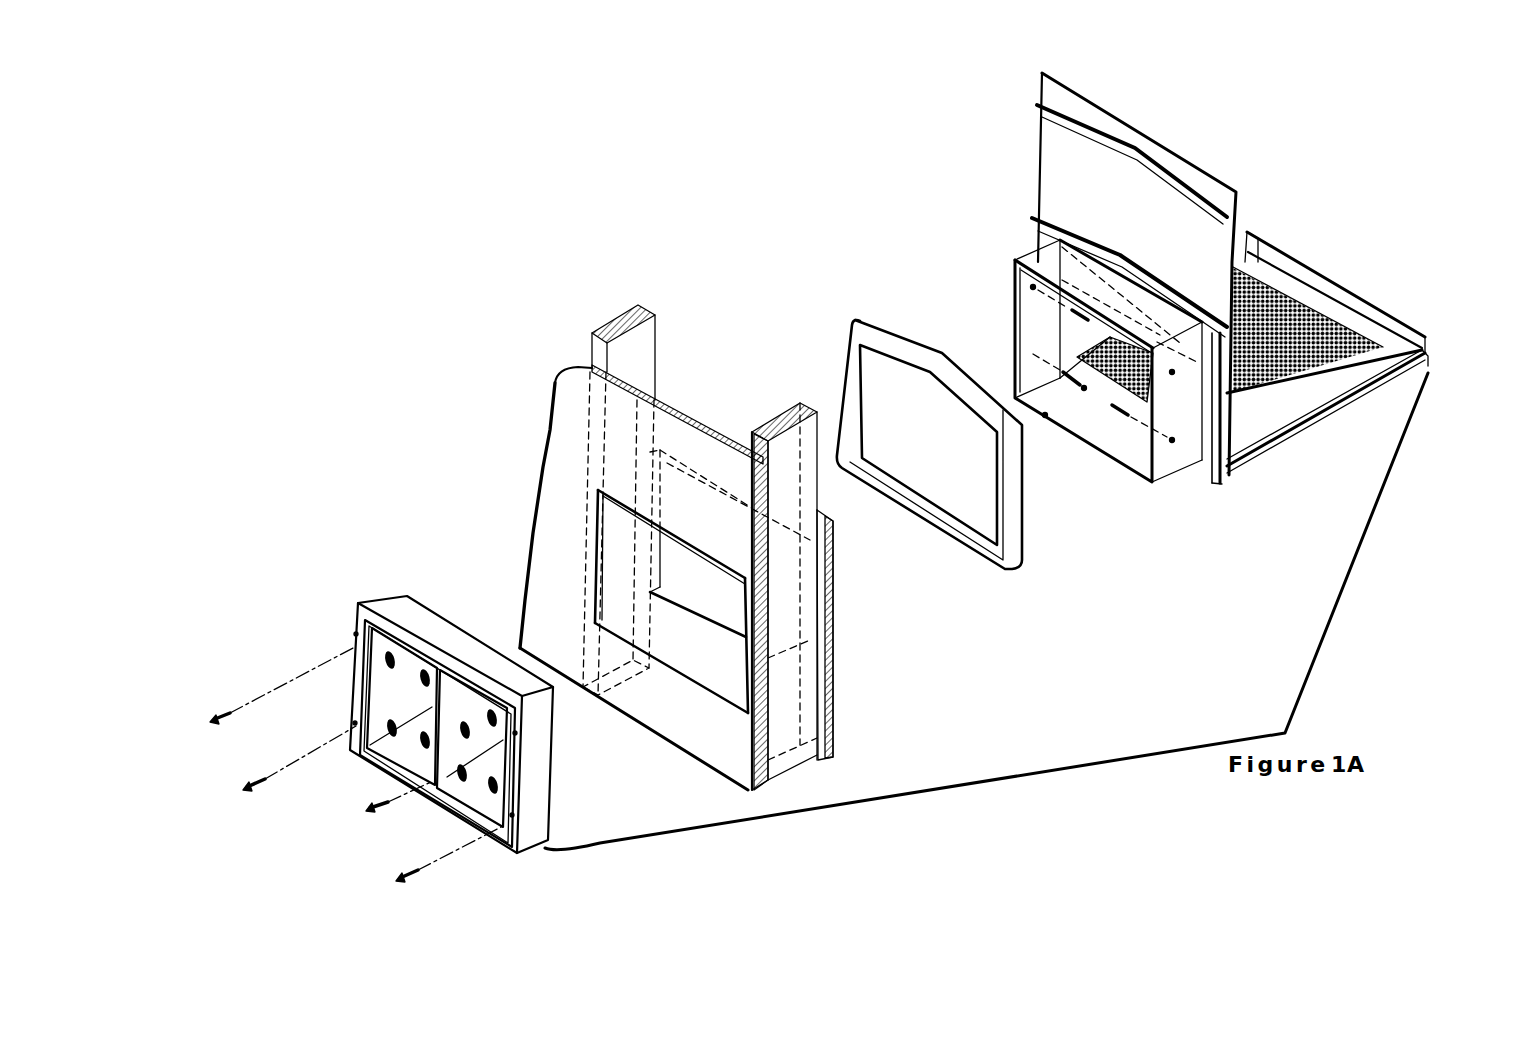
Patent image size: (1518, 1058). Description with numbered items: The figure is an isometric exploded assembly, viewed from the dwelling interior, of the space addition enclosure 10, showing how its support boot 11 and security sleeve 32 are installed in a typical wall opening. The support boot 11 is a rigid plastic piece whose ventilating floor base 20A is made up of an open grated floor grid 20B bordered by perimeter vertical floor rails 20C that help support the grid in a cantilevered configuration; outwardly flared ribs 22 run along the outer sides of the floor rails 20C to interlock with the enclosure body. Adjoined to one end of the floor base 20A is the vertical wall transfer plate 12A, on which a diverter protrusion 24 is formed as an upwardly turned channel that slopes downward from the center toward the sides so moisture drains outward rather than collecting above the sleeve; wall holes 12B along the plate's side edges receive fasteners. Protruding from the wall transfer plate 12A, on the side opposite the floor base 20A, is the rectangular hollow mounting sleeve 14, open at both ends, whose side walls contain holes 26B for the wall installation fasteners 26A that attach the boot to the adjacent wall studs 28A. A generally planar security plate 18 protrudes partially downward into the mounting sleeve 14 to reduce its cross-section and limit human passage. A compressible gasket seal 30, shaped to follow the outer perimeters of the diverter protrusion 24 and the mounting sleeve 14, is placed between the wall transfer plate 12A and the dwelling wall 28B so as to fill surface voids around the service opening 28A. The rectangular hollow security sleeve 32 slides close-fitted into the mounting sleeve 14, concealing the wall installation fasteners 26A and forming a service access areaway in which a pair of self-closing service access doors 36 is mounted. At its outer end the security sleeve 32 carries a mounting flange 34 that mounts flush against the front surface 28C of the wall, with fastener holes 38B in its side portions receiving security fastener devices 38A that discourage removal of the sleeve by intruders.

The space addition enclosure 10 is at (1035, 707).
The support boot 11 is at (1290, 449).
The wall transfer plate 12A is at (1165, 222).
The wall holes 12B is at (1223, 283).
The mounting sleeve 14 is at (1040, 262).
The security plate 18 is at (1050, 242).
The ventilating floor base 20A is at (1267, 270).
The floor grid 20B is at (1355, 298).
The floor rails 20C is at (1315, 282).
The ribs 22 is at (1345, 400).
The diverter protrusion 24 is at (1095, 252).
The wall installation fasteners 26A is at (1030, 285).
The holes 26B is at (1032, 353).
The service opening 28A is at (615, 318).
The dwelling wall 28B is at (830, 627).
The front surface 28C is at (573, 417).
The gasket seal 30 is at (1002, 487).
The security sleeve 32 is at (385, 588).
The mounting flange 34 is at (364, 620).
The service access doors 36 is at (417, 712).
The security fastener devices 38A is at (220, 712).
The fastener holes 38B is at (355, 636).